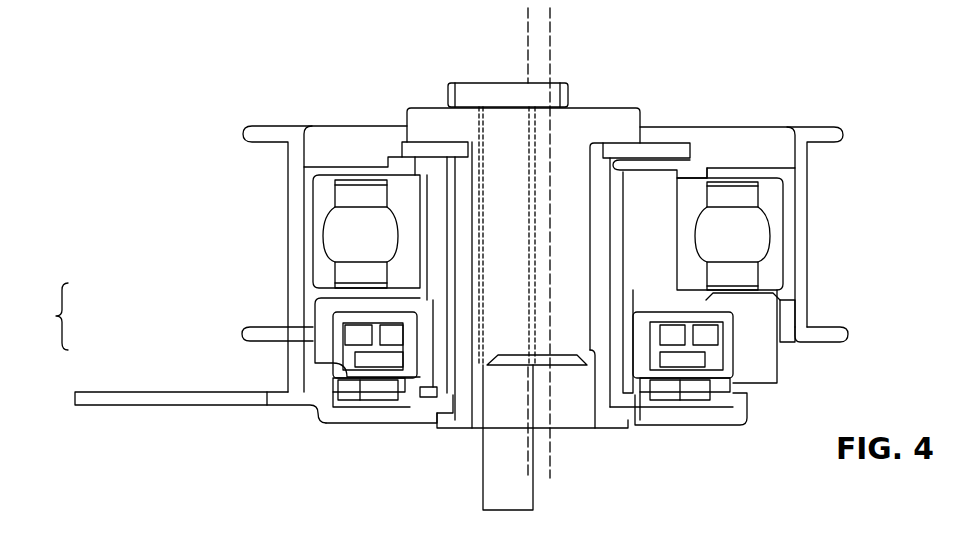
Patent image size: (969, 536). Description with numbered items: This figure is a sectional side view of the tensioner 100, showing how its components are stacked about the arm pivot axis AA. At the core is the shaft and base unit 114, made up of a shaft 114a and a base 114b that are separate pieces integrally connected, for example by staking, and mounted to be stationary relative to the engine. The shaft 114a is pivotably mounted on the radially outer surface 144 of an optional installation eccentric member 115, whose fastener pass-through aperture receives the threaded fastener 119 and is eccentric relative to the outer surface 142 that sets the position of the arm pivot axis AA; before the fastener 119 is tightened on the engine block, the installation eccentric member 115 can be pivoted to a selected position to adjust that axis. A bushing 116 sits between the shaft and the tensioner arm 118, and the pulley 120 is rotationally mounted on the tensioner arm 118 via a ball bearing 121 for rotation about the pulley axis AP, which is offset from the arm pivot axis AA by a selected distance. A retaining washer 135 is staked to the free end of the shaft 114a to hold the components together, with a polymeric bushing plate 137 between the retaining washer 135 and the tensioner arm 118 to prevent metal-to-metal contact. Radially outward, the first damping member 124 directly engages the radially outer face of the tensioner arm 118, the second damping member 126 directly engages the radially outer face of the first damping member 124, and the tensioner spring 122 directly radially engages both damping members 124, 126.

The tensioner 100 is at (268, 77).
The shaft and base unit 114 is at (43, 316).
The shaft 114a is at (462, 308).
The base 114b is at (140, 388).
The installation eccentric member 115 is at (433, 112).
The bushing 116 is at (448, 272).
The tensioner arm 118 is at (430, 222).
The threaded fastener 119 is at (567, 92).
The pulley 120 is at (258, 128).
The bearing 121 is at (317, 202).
The tensioner spring 122 is at (390, 355).
The first damping member 124 is at (417, 383).
The second damping member 126 is at (407, 337).
The retaining washer 135 is at (660, 148).
The polymeric bushing plate 137 is at (692, 164).
The radially outer surface 142 is at (480, 150).
The radially outer surface 144 is at (480, 196).
The arm pivot axis AA is at (528, 462).
The pulley axis AP is at (550, 462).